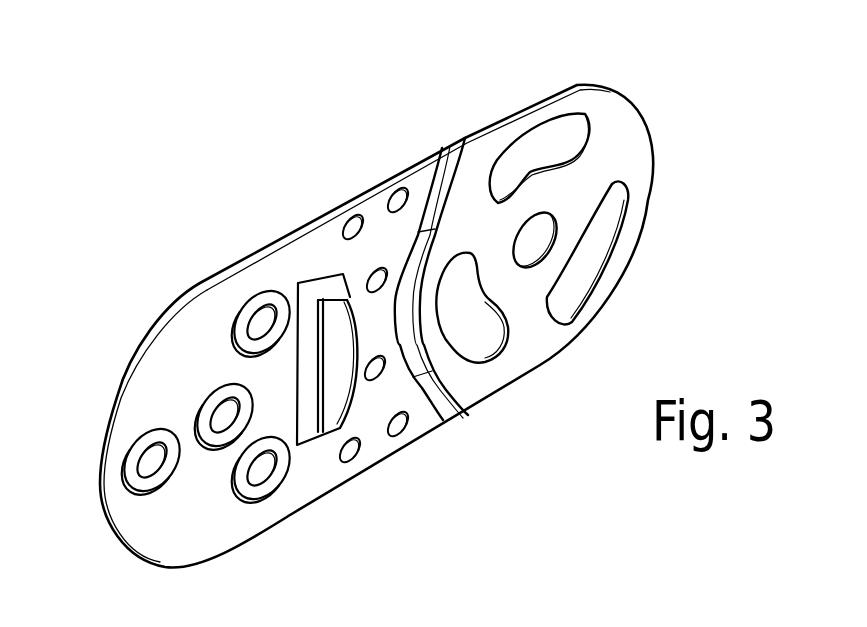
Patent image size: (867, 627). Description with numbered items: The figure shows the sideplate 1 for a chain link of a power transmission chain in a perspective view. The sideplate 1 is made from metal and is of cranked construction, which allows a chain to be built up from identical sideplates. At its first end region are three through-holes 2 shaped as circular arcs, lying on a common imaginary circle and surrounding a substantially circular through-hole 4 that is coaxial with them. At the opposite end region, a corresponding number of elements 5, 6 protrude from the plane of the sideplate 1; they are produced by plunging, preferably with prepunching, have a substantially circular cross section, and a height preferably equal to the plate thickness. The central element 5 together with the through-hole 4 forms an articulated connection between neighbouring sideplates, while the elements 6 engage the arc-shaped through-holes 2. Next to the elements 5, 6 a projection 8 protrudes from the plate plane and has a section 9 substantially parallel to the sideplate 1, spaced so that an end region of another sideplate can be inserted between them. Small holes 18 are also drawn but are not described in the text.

The sideplate 1 is at (100, 428).
The through-holes 2 is at (537, 157).
The through-hole 4 is at (540, 237).
The element 5 is at (207, 410).
The elements 6 is at (133, 487).
The projection 8 is at (333, 298).
The section 9 is at (323, 293).
The small holes 18 is at (397, 435).